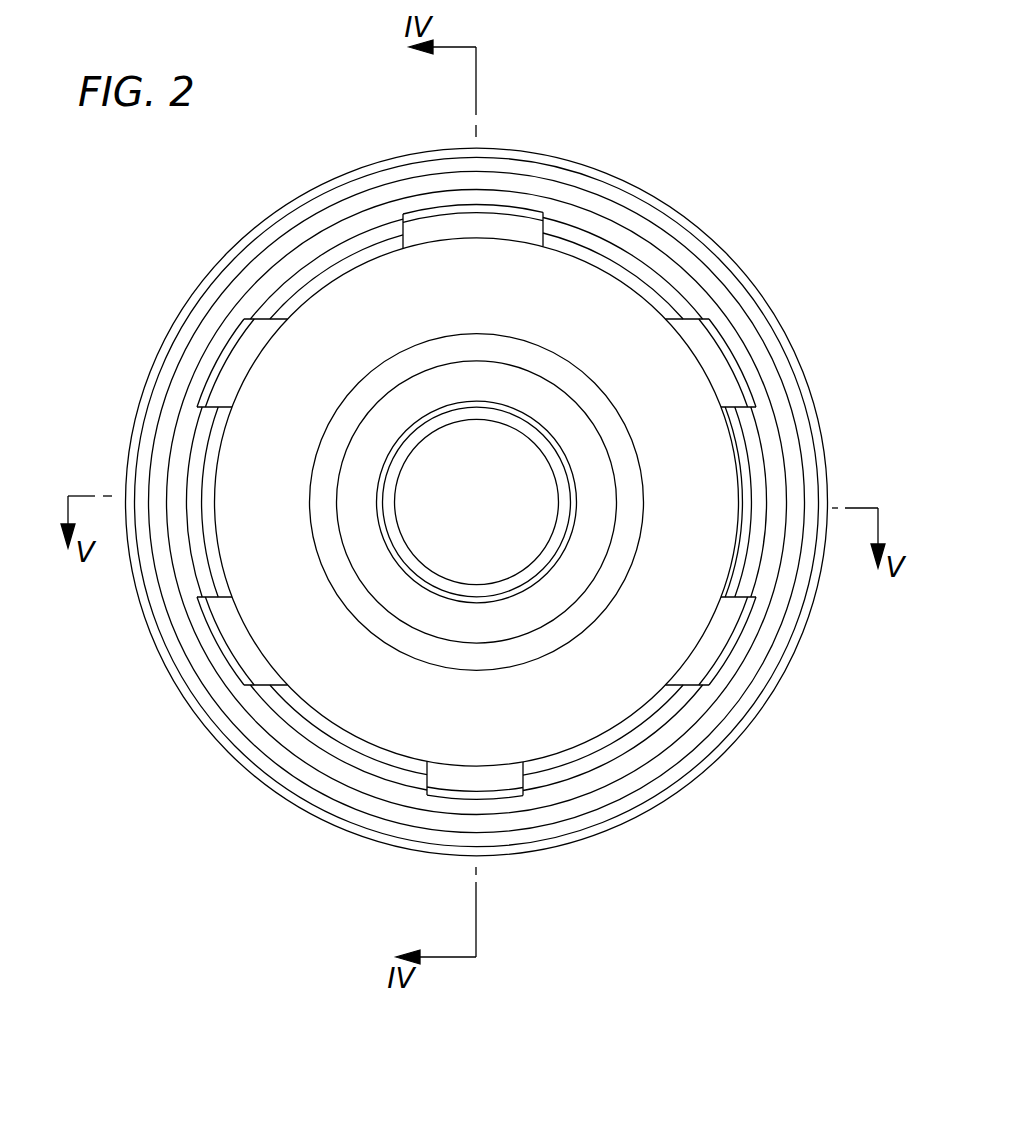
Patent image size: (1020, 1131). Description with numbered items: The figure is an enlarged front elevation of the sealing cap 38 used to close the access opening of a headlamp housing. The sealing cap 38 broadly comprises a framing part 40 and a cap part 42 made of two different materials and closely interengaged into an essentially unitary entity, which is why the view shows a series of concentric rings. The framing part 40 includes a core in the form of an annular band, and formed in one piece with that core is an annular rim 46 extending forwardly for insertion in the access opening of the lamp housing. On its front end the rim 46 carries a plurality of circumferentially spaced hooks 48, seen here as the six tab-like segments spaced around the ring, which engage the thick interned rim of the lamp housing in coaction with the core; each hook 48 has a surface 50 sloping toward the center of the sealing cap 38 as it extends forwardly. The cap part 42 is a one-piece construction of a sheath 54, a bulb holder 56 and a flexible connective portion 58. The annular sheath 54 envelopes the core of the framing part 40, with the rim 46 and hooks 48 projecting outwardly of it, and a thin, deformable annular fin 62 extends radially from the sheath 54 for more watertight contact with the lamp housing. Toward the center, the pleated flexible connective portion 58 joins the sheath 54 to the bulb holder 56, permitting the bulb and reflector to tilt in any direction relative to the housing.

The sealing cap 38 is at (736, 104).
The cap part 42 is at (254, 210).
The annular fin 62 is at (585, 175).
The sheath 54 is at (628, 218).
The annular rim 46 is at (348, 250).
The hooks 48 is at (517, 212).
The sloping surface 50 is at (440, 210).
The framing part 40 is at (432, 252).
The flexible connective portion 58 is at (396, 375).
The bulb holder 56 is at (532, 437).